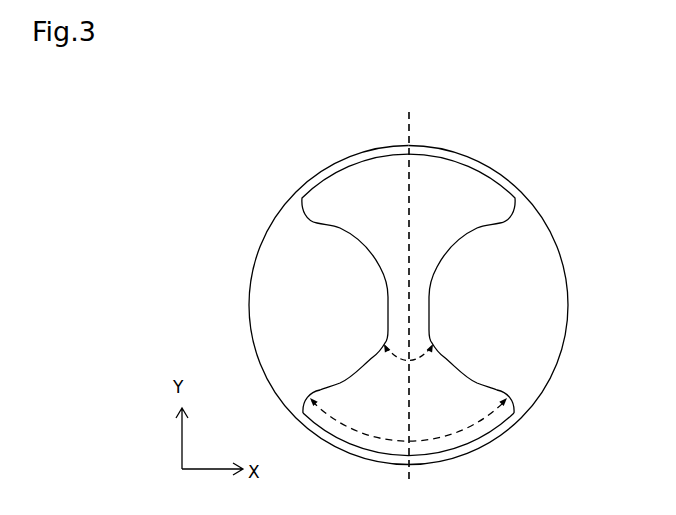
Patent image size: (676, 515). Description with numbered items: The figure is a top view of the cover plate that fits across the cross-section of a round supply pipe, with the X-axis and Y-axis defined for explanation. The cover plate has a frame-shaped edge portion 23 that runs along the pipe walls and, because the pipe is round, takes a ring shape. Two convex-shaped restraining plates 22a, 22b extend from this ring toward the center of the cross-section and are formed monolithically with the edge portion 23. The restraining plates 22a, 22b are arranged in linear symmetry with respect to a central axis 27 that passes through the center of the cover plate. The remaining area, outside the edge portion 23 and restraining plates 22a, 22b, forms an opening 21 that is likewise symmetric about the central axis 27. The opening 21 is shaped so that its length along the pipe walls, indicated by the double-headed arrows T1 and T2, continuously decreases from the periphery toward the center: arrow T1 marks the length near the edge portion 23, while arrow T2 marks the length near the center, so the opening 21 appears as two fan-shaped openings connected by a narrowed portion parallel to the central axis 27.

The opening 21 is at (478, 185).
The restraining plate 22a is at (473, 297).
The restraining plate 22b is at (328, 290).
The edge portion 23 is at (495, 433).
The central axis 27 is at (408, 127).
The arrow T1 is at (408, 419).
The arrow T2 is at (410, 363).